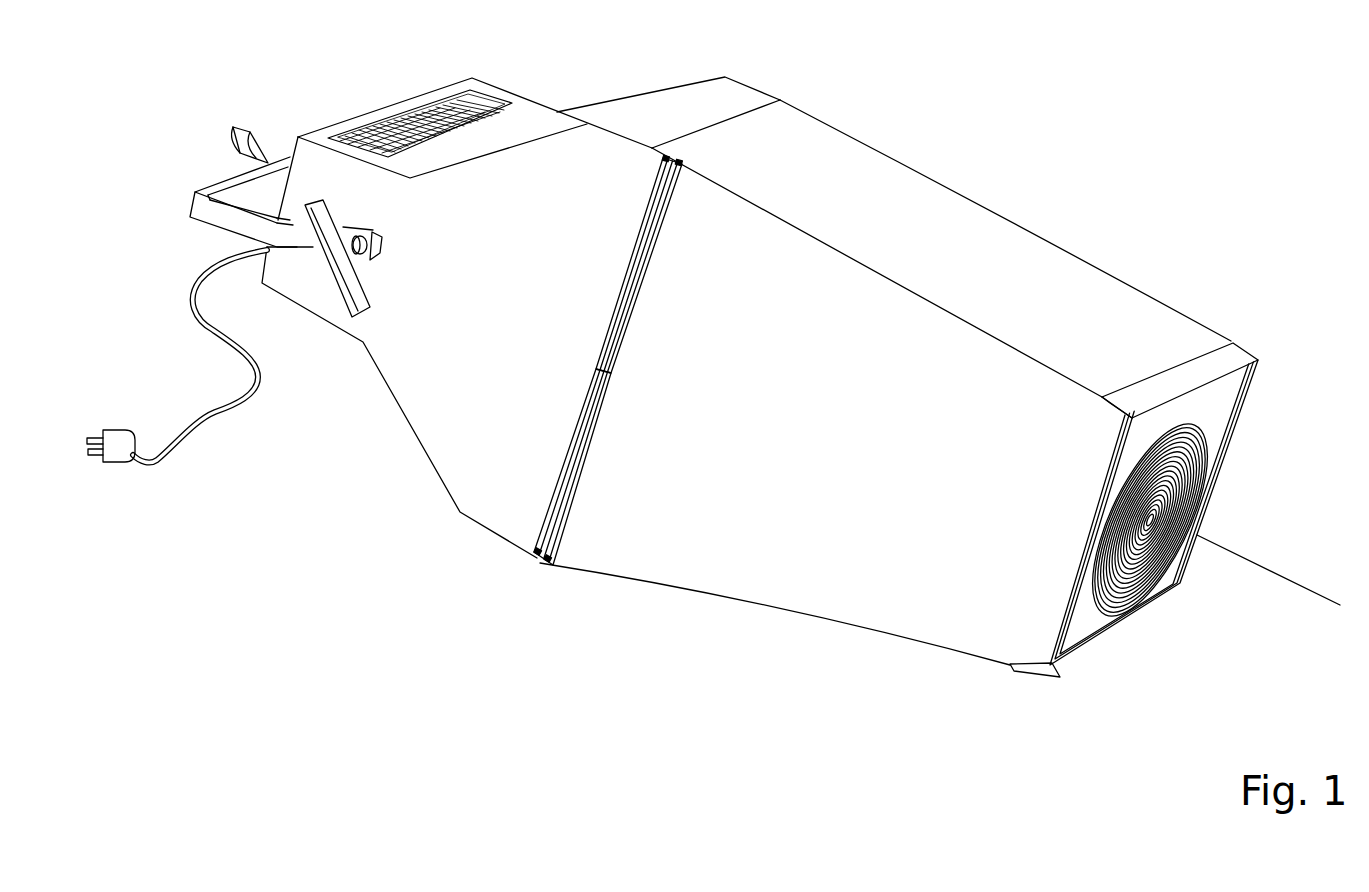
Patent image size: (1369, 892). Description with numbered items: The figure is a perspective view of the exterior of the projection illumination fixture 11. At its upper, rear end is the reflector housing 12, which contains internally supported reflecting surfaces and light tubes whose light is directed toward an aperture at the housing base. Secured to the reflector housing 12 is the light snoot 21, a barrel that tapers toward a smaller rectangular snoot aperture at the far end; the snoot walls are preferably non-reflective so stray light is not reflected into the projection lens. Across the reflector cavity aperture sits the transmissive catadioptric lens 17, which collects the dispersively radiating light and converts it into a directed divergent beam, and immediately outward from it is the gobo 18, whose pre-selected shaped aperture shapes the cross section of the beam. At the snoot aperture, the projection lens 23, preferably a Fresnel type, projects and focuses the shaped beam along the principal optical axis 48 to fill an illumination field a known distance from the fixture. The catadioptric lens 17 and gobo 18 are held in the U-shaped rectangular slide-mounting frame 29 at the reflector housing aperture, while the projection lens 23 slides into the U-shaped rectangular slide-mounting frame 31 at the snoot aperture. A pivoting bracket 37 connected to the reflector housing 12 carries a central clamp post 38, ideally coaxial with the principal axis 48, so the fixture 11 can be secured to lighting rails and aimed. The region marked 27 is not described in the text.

The projection illumination fixture 11 is at (652, 70).
The reflector housing 12 is at (741, 90).
The transmissive catadioptric lens 17 is at (596, 369).
The gobo 18 is at (611, 373).
The light snoot 21 is at (916, 174).
The projection lens 23 is at (1133, 613).
The control housing with vent grille 27 is at (323, 157).
The U-shaped rectangular slide-mounting frame 29 is at (683, 165).
The U-shaped rectangular slide-mounting frame 31 is at (1253, 352).
The pivoting bracket 37 is at (197, 192).
The central clamp post 38 is at (237, 130).
The principal optical axis 48 is at (1273, 567).